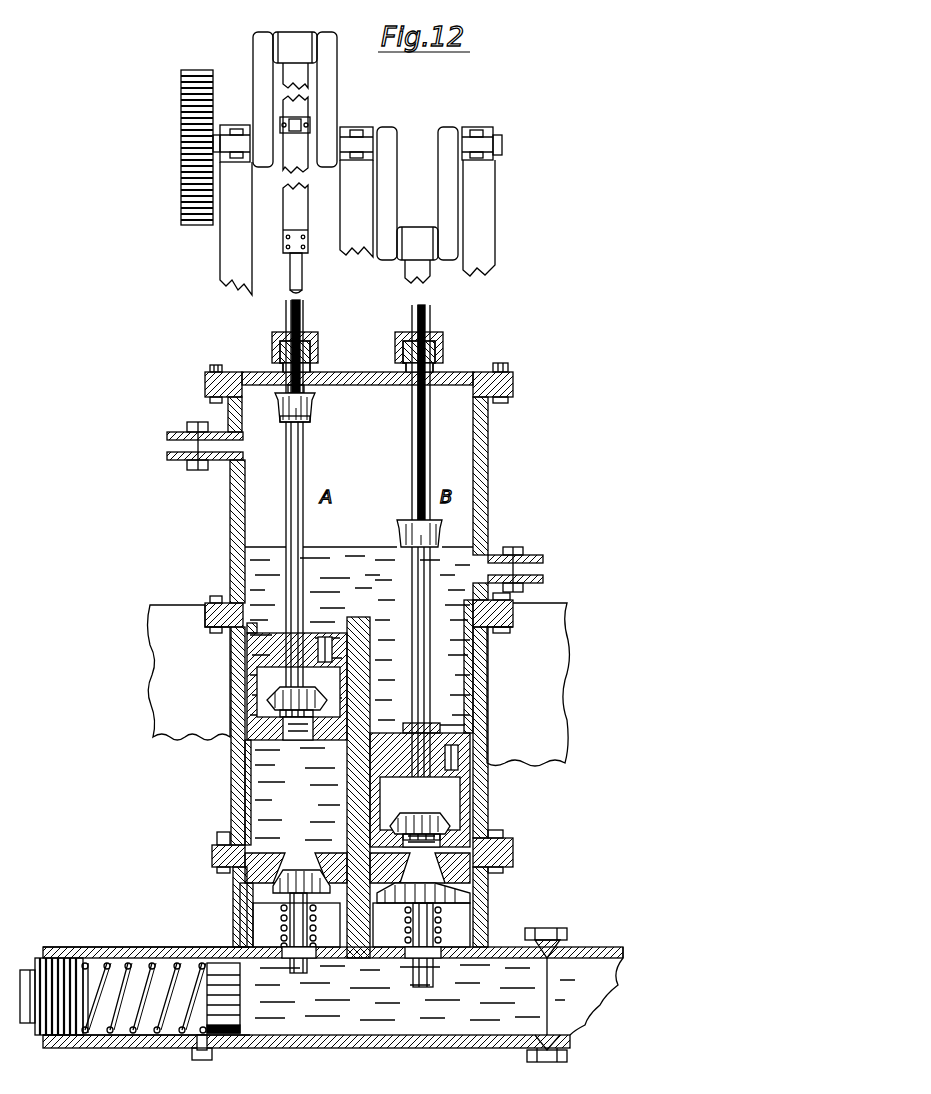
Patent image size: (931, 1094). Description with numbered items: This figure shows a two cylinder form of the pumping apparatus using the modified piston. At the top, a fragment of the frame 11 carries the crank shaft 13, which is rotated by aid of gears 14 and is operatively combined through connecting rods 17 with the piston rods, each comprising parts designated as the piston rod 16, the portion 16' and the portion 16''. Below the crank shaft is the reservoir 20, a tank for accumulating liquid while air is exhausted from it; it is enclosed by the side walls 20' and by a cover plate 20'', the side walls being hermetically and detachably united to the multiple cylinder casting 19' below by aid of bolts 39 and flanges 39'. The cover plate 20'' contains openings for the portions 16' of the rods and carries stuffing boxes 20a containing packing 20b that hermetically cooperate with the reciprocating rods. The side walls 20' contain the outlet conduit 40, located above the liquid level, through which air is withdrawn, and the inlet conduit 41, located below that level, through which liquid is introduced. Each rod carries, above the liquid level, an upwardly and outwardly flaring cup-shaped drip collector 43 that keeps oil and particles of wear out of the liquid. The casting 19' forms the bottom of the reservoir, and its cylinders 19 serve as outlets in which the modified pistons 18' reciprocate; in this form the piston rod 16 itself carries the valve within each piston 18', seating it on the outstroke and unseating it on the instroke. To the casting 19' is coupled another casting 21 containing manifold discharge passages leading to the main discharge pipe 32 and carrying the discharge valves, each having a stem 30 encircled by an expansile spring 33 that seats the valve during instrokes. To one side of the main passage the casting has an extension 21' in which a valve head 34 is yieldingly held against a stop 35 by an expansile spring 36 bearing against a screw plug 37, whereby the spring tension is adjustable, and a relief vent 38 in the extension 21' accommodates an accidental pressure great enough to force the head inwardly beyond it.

The frame 11 is at (359, 399).
The crank shaft 13 is at (216, 128).
The gears 14 is at (195, 142).
The piston rod 16 is at (323, 471).
The piston rod portion 16' is at (325, 399).
The piston rod portion 16'' is at (283, 439).
The connecting rods 17 is at (300, 208).
The modified piston 18' is at (358, 763).
The cylinders 19 is at (360, 700).
The multiple cylinder casting 19' is at (367, 722).
The reservoir 20 is at (359, 615).
The side walls 20' is at (513, 498).
The cover plate 20'' is at (359, 367).
The stuffing boxes 20a is at (318, 340).
The packing 20b is at (318, 356).
The casting 21 is at (333, 722).
The extension 21' is at (146, 971).
The valve stem 30 is at (292, 975).
The main discharge pipe 32 is at (598, 999).
The expansile spring 33 is at (313, 927).
The valve head 34 is at (240, 1005).
The stop 35 is at (245, 1030).
The expansile spring 36 is at (140, 1021).
The screw plug 37 is at (36, 958).
The relief vent 38 is at (204, 1060).
The bolts 39 is at (417, 703).
The flanges 39' is at (412, 719).
The outlet conduit 40 is at (185, 448).
The inlet conduit 41 is at (495, 580).
The drip collector 43 is at (322, 420).